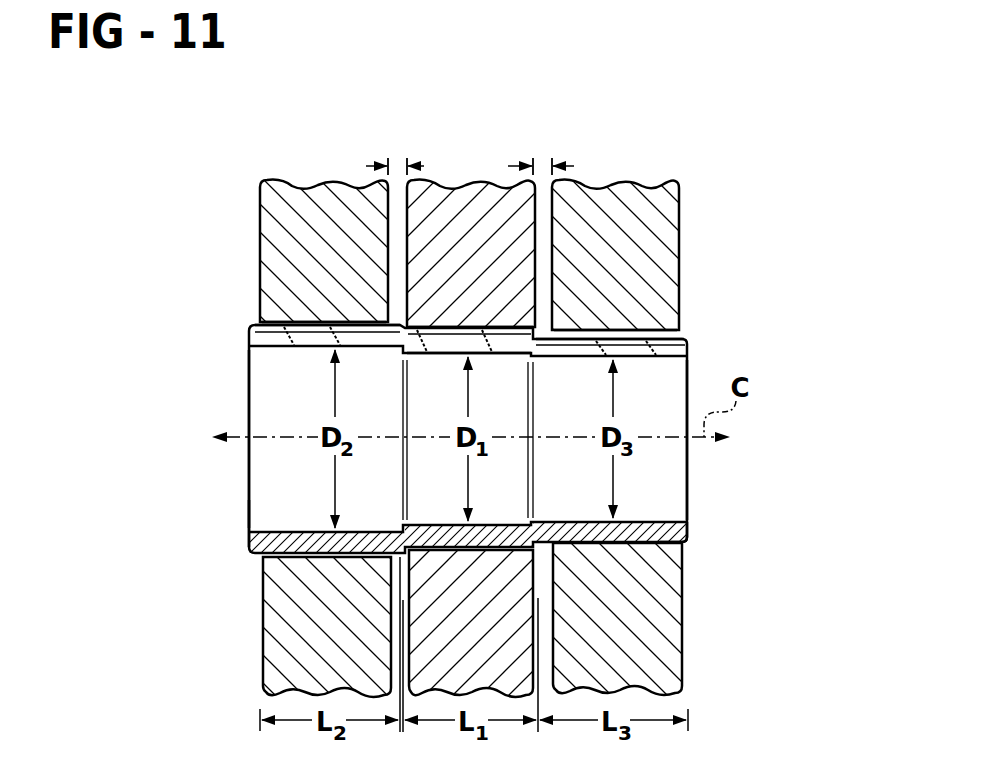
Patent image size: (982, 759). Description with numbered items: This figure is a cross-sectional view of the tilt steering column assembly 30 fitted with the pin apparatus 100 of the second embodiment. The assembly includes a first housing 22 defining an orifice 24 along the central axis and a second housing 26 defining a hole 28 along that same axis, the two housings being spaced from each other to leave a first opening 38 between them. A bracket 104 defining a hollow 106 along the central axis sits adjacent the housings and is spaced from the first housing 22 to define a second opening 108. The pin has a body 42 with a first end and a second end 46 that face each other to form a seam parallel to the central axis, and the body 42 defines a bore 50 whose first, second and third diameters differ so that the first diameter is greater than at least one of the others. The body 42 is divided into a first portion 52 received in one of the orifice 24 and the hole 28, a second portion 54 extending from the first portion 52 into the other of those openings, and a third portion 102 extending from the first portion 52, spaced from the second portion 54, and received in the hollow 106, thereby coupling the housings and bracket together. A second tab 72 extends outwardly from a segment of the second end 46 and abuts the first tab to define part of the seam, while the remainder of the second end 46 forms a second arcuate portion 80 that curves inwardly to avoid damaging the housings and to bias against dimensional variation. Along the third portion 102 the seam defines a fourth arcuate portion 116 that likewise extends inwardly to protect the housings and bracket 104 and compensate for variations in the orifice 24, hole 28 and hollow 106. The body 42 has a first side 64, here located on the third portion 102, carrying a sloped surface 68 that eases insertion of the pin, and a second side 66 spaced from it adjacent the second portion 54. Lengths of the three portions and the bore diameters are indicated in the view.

The first housing 22 is at (433, 198).
The orifice 24 is at (457, 322).
The second housing 26 is at (282, 198).
The hole 28 is at (291, 322).
The tilt steering column assembly 30 is at (692, 173).
The first opening 38 is at (366, 166).
The body 42 is at (251, 545).
The second end 46 is at (270, 338).
The bore 50 is at (275, 366).
The first portion 52 is at (472, 566).
The second portion 54 is at (328, 566).
The first side 64 is at (690, 488).
The second side 66 is at (251, 502).
The sloped surface 68 is at (690, 541).
The second tab 72 is at (513, 343).
The second arcuate portion 80 is at (280, 328).
The pin apparatus 100 is at (737, 521).
The third portion 102 is at (625, 553).
The bracket 104 is at (657, 252).
The hollow 106 is at (643, 330).
The second opening 108 is at (574, 166).
The fourth arcuate portion 116 is at (653, 334).